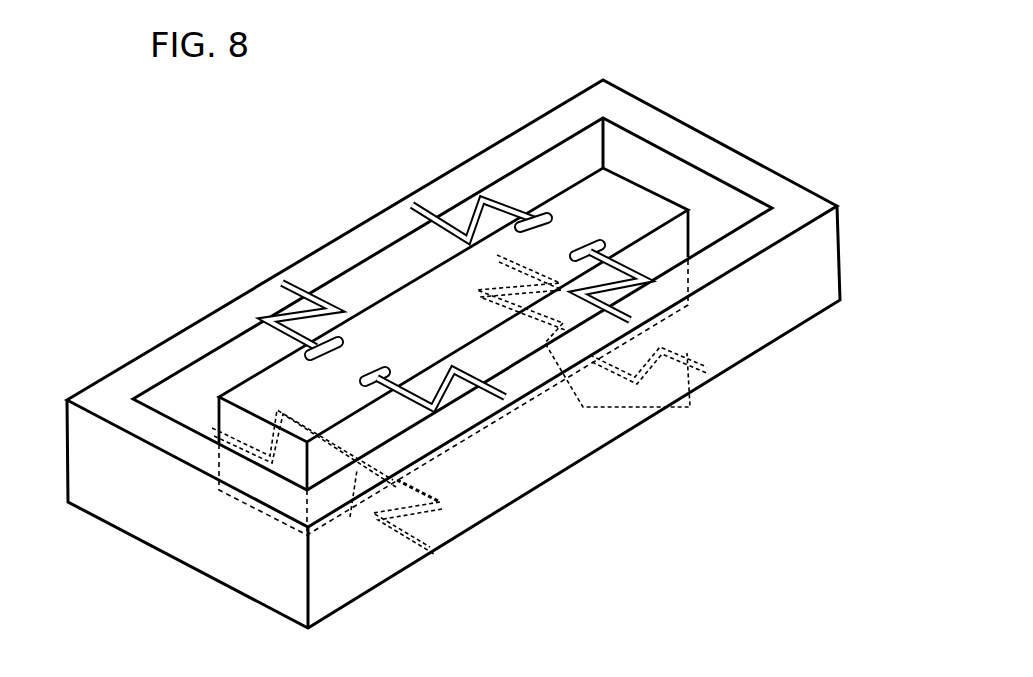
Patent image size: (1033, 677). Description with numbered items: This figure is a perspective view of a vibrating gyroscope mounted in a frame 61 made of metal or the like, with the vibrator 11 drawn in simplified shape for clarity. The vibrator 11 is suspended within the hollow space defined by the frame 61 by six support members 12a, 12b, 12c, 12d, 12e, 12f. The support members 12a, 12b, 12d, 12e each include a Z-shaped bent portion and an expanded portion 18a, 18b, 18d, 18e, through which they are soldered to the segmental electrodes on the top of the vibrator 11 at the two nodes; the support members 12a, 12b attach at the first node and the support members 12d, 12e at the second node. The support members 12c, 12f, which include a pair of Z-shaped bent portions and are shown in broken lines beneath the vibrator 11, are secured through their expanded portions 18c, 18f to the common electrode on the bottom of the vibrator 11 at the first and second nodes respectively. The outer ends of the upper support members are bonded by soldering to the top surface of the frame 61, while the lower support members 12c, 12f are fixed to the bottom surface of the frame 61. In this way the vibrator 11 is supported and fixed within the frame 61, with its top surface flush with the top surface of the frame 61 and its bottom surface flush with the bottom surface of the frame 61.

The frame 61 is at (708, 137).
The vibrator 11 is at (603, 200).
The support member 12a is at (282, 283).
The support member 12b is at (512, 398).
The support member 12c is at (433, 553).
The support member 12d is at (412, 204).
The support member 12e is at (632, 318).
The support member 12f is at (693, 407).
The expanded portion 18a is at (306, 355).
The expanded portion 18b is at (378, 384).
The expanded portion 18c is at (353, 487).
The expanded portion 18d is at (538, 217).
The expanded portion 18e is at (603, 243).
The expanded portion 18f is at (665, 412).